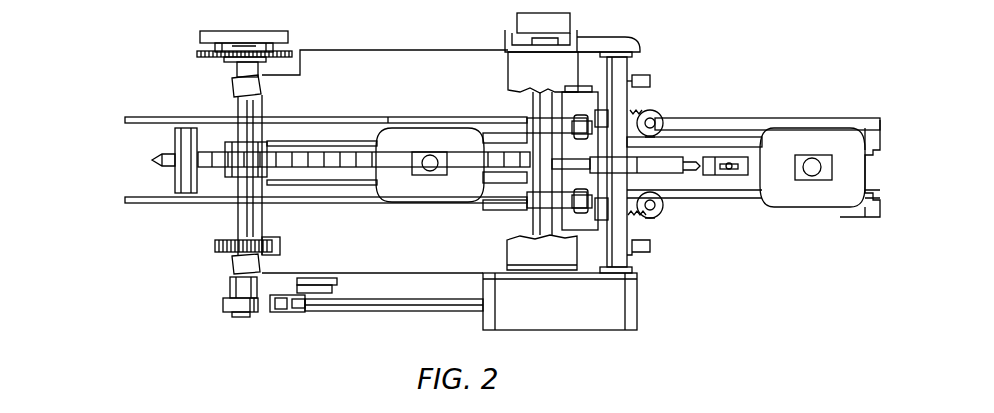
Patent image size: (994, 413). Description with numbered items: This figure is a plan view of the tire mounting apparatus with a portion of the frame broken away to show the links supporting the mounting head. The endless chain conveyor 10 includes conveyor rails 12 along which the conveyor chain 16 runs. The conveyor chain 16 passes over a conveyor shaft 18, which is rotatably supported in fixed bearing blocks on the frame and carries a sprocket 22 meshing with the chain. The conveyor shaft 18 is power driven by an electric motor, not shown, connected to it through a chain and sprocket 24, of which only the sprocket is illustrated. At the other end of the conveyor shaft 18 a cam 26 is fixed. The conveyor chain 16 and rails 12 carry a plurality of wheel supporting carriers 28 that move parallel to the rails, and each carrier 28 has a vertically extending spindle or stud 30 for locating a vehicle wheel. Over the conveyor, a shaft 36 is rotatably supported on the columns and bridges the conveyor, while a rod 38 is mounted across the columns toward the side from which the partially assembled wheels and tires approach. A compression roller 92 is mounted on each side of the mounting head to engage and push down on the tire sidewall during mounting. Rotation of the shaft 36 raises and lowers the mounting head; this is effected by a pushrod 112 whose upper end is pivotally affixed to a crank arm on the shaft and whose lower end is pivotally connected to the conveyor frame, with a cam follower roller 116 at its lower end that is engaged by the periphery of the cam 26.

The endless chain conveyor 10 is at (502, 192).
The conveyor rails 12 is at (873, 120).
The conveyor chain 16 is at (329, 160).
The conveyor shaft 18 is at (238, 100).
The sprocket 22 is at (258, 150).
The sprocket 24 is at (206, 54).
The cam 26 is at (227, 312).
The wheel supporting carriers 28 is at (620, 197).
The spindle or stud 30 is at (432, 171).
The shaft 36 is at (537, 105).
The rod 38 is at (622, 68).
The compression roller 92 is at (651, 82).
The pushrod 112 is at (386, 312).
The cam follower roller 116 is at (279, 315).